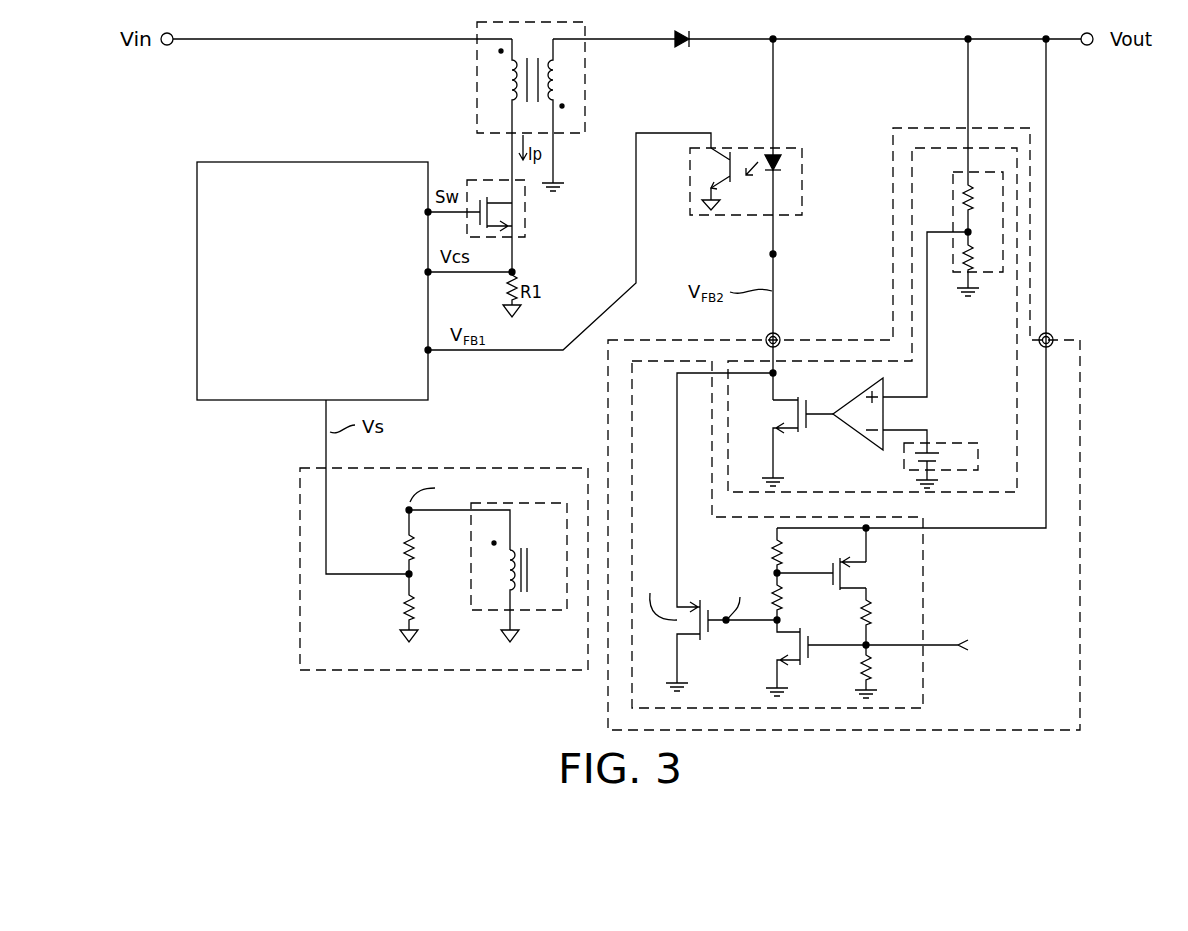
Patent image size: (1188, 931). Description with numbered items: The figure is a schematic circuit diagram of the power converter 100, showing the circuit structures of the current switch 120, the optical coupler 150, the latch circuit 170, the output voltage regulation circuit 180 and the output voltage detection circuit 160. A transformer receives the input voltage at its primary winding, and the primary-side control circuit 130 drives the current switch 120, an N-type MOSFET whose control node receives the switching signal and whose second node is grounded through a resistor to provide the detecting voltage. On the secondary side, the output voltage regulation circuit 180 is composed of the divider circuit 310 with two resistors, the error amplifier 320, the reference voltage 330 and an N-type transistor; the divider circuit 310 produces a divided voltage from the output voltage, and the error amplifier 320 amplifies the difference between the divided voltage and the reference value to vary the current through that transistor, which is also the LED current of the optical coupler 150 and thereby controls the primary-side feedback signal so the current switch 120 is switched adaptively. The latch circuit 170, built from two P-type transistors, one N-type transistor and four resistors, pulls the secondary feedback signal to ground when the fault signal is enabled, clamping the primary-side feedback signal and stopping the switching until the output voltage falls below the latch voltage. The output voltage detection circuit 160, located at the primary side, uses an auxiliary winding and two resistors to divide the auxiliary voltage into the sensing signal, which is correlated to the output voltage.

The power converter 100 is at (1183, 684).
The current switch 120 is at (535, 215).
The primary-side control circuit 130 is at (250, 161).
The optical coupler 150 is at (795, 148).
The output voltage detection circuit 160 is at (298, 552).
The latch circuit 170 is at (926, 580).
The output voltage regulation circuit 180 is at (960, 494).
The divider circuit 310 is at (991, 276).
The error amplifier 320 is at (862, 394).
The reference voltage 330 is at (949, 444).